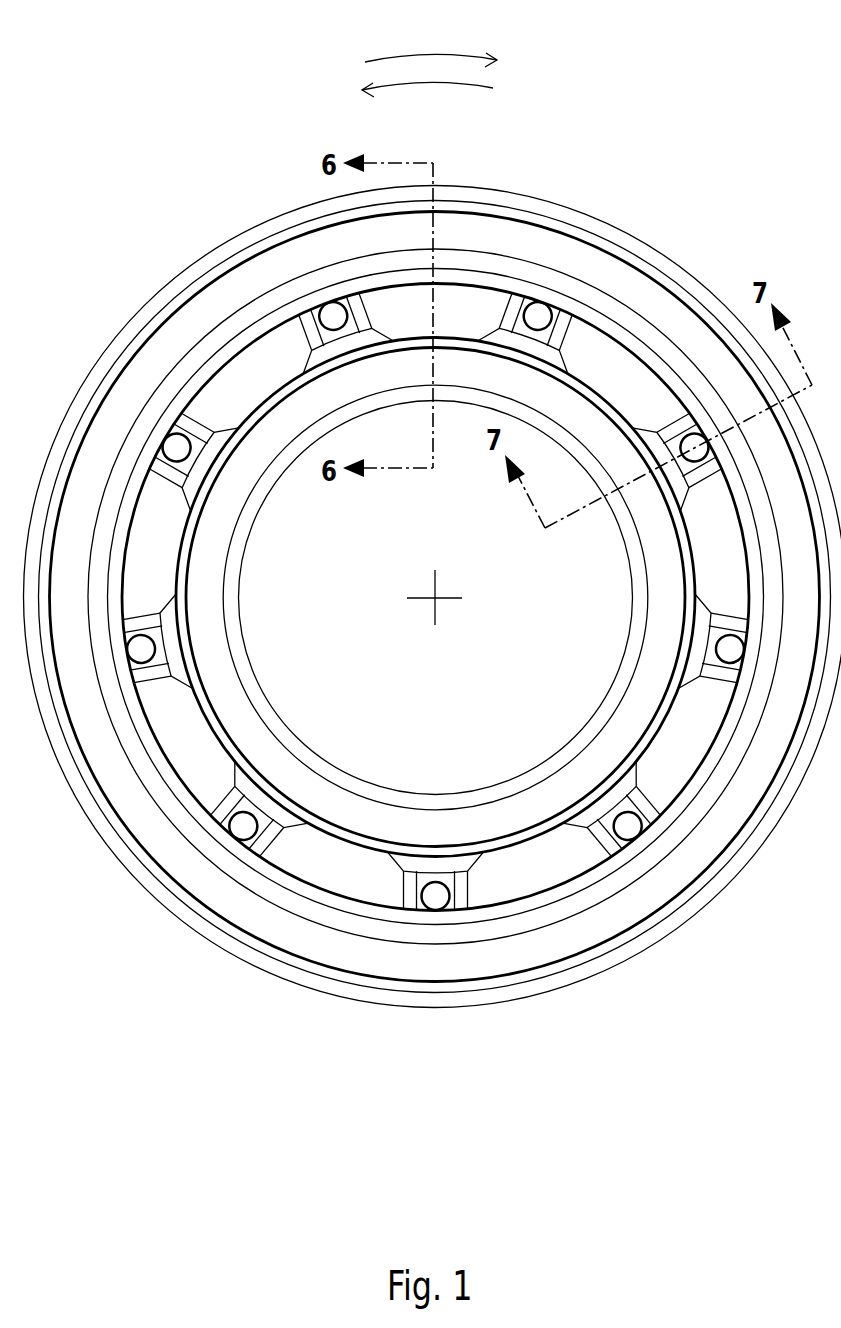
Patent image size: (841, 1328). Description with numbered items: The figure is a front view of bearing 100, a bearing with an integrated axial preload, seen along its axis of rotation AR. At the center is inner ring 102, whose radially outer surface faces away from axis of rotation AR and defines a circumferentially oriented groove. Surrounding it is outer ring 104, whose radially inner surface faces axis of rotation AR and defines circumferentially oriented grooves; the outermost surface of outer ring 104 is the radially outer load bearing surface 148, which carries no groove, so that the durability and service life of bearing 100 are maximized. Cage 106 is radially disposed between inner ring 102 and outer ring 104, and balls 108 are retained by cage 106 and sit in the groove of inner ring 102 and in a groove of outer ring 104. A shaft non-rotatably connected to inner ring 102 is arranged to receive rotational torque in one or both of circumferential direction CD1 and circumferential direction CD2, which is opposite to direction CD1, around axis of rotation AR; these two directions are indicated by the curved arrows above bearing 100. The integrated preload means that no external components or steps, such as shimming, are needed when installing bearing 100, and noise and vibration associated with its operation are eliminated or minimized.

The bearing 100 is at (680, 70).
The inner ring 102 is at (260, 508).
The outer ring 104 is at (153, 287).
The cage 106 is at (540, 312).
The balls 108 is at (627, 375).
The radially outer load bearing surface 148 is at (258, 228).
The axis of rotation AR is at (437, 602).
The circumferential direction CD1 is at (440, 56).
The circumferential direction CD2 is at (468, 88).